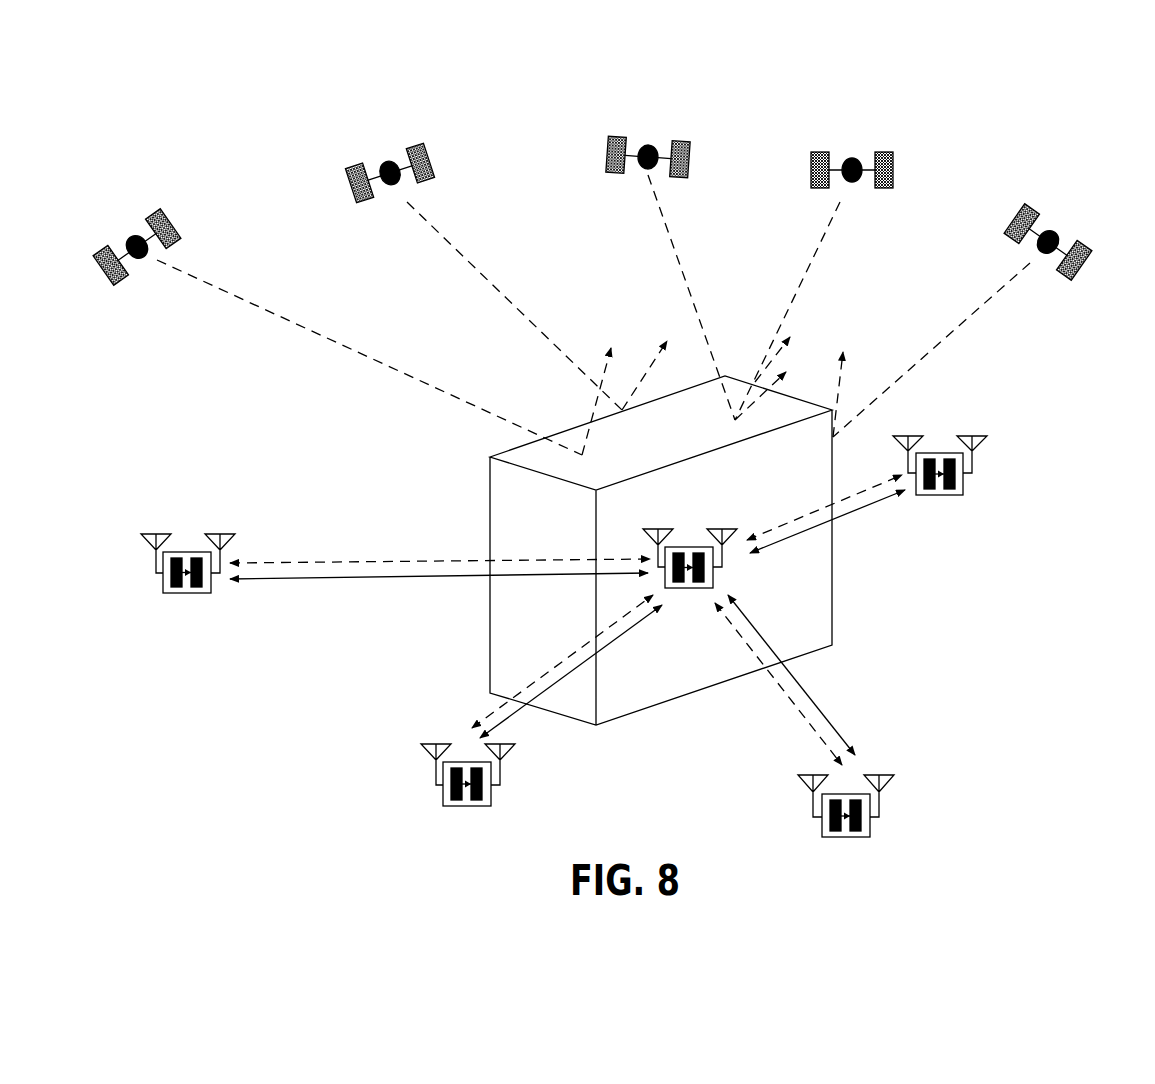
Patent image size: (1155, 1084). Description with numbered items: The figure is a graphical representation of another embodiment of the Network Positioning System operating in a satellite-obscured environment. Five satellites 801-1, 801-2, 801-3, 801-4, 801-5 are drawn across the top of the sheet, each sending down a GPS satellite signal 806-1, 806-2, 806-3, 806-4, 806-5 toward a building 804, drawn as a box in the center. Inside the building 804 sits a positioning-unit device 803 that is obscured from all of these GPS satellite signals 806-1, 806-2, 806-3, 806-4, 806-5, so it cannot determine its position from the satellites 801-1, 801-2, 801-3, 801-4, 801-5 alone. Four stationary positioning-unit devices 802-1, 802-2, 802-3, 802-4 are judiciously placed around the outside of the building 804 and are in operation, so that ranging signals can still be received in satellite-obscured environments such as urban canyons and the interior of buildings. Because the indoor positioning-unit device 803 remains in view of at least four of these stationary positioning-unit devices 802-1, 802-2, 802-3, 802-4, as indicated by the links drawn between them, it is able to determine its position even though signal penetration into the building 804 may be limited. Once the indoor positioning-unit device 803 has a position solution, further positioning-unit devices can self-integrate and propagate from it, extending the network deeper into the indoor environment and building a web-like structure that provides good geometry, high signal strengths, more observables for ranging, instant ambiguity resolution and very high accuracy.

The satellite 801-1 is at (131, 220).
The satellite 801-2 is at (386, 148).
The satellite 801-3 is at (660, 128).
The satellite 801-4 is at (862, 147).
The satellite 801-5 is at (1057, 222).
The GPS satellite signal 806-1 is at (254, 300).
The GPS satellite signal 806-2 is at (498, 275).
The GPS satellite signal 806-3 is at (689, 285).
The GPS satellite signal 806-4 is at (827, 238).
The GPS satellite signal 806-5 is at (986, 312).
The building 804 is at (487, 497).
The positioning-unit device 803 is at (720, 576).
The stationary positioning-unit device 802-1 is at (175, 604).
The stationary positioning-unit device 802-2 is at (428, 794).
The stationary positioning-unit device 802-3 is at (878, 822).
The stationary positioning-unit device 802-4 is at (977, 482).